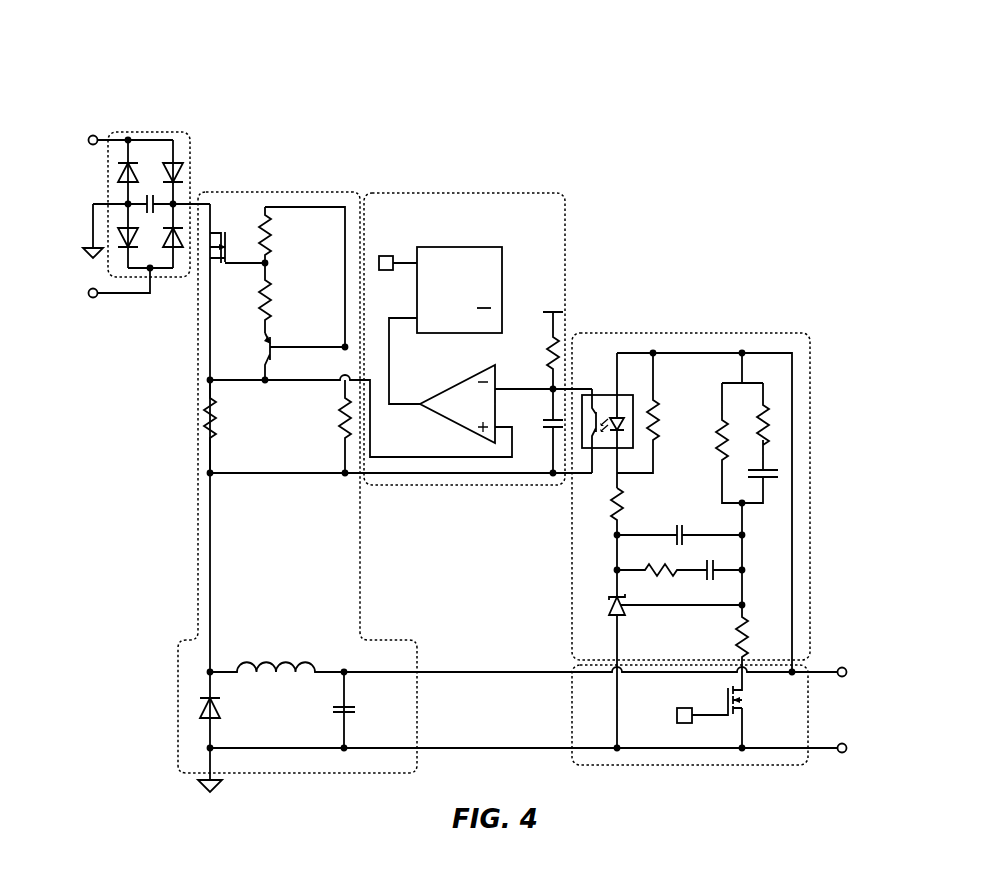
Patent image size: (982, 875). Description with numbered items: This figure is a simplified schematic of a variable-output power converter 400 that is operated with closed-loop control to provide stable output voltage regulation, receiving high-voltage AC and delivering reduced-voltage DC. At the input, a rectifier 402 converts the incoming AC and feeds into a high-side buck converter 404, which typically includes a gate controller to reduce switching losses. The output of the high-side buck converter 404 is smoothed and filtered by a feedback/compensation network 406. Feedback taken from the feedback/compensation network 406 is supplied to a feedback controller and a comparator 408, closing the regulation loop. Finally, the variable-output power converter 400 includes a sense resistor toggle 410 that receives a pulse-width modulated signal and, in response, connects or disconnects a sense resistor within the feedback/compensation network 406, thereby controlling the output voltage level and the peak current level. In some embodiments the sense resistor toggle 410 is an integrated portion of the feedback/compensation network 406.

The variable-output power converter 400 is at (219, 62).
The rectifier 402 is at (148, 131).
The high-side buck converter 404 is at (280, 192).
The feedback/compensation network 406 is at (692, 333).
The feedback controller and comparator 408 is at (475, 193).
The sense resistor toggle 410 is at (808, 709).